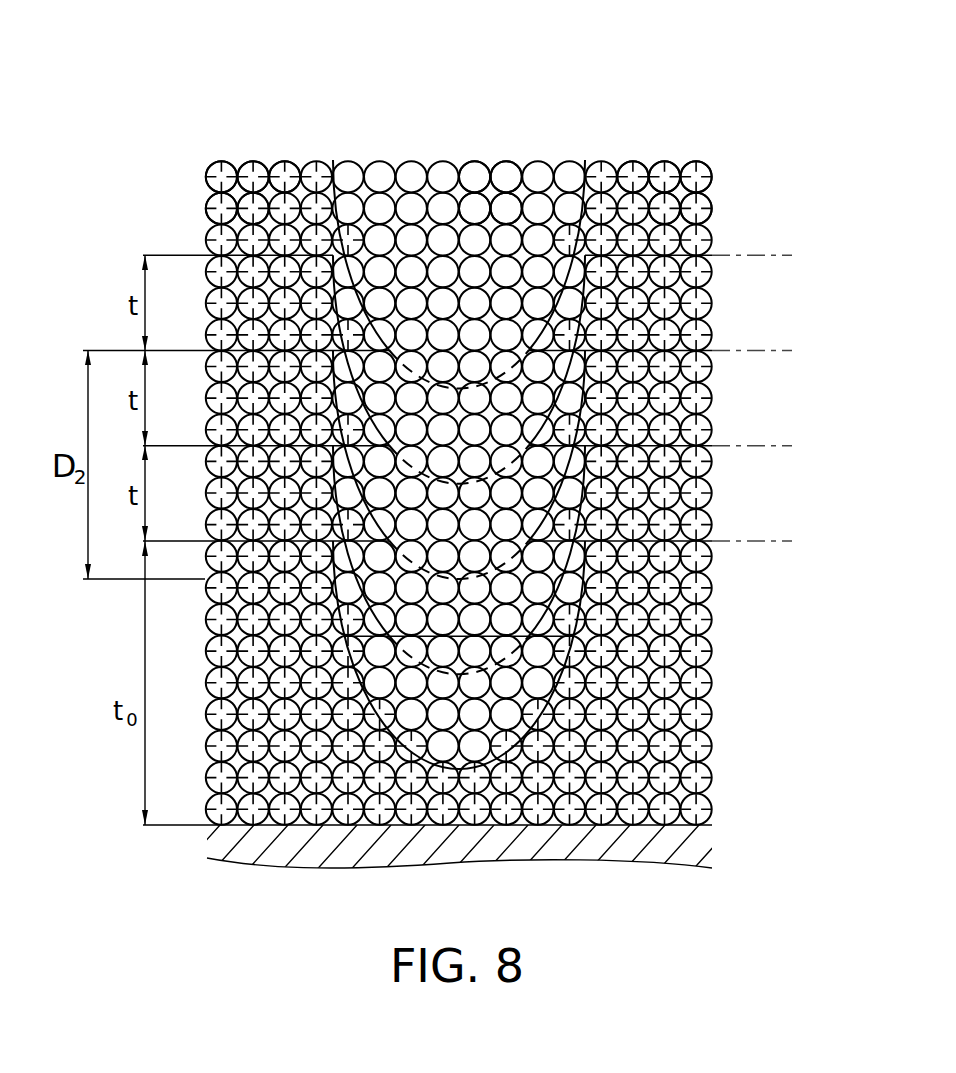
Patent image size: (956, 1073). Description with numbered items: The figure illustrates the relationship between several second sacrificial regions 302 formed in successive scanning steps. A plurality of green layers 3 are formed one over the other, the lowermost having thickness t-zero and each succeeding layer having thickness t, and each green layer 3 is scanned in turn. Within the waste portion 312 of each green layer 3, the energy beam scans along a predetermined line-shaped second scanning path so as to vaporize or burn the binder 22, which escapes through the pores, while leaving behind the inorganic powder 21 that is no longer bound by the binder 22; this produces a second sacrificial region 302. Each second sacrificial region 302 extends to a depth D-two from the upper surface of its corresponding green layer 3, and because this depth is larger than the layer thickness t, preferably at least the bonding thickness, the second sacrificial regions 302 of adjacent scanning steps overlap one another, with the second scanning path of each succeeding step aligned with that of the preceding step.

The green layer 3 is at (715, 202).
The inorganic powder 21 is at (296, 172).
The binder 22 is at (236, 167).
The second sacrificial region 302 is at (509, 131).
The waste portion 312 is at (228, 47).